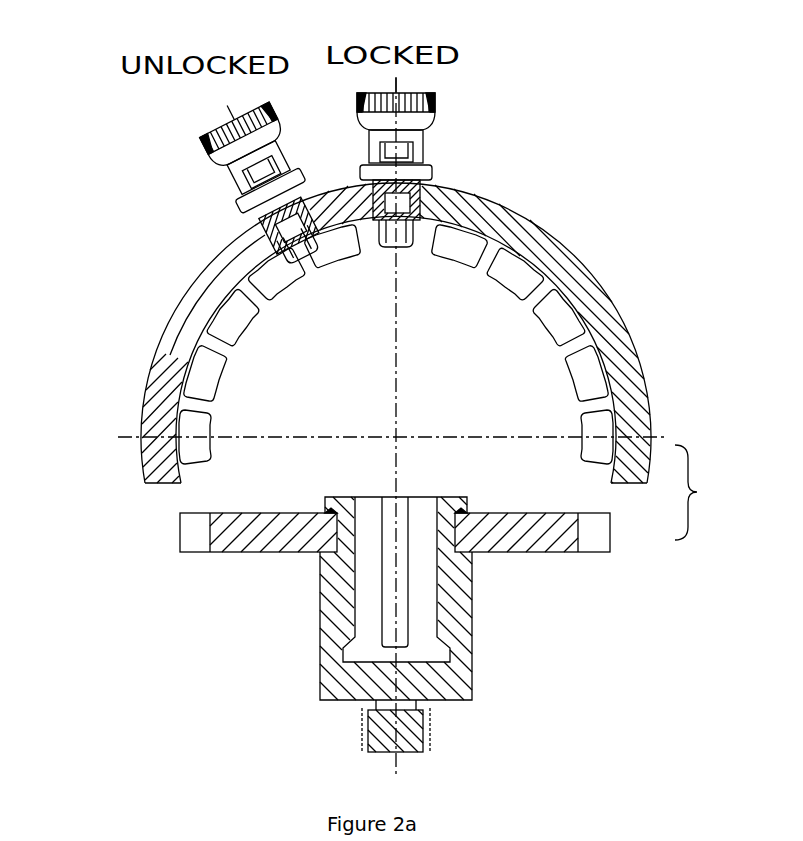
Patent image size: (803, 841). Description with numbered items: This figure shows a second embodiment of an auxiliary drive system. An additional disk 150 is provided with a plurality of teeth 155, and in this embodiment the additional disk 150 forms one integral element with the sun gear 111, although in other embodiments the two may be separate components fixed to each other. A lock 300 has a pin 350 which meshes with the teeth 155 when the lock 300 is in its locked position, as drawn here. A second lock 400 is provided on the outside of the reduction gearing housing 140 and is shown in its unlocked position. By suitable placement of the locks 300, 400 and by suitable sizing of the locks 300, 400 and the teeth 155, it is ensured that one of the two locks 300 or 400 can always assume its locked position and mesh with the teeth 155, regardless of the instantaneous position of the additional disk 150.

The lock 300 is at (482, 126).
The second lock 400 is at (172, 147).
The pin 350 is at (402, 233).
The reduction gearing housing 140 is at (578, 275).
The teeth 155 is at (188, 405).
The additional disk 150 is at (250, 538).
The sun gear 111 is at (408, 727).